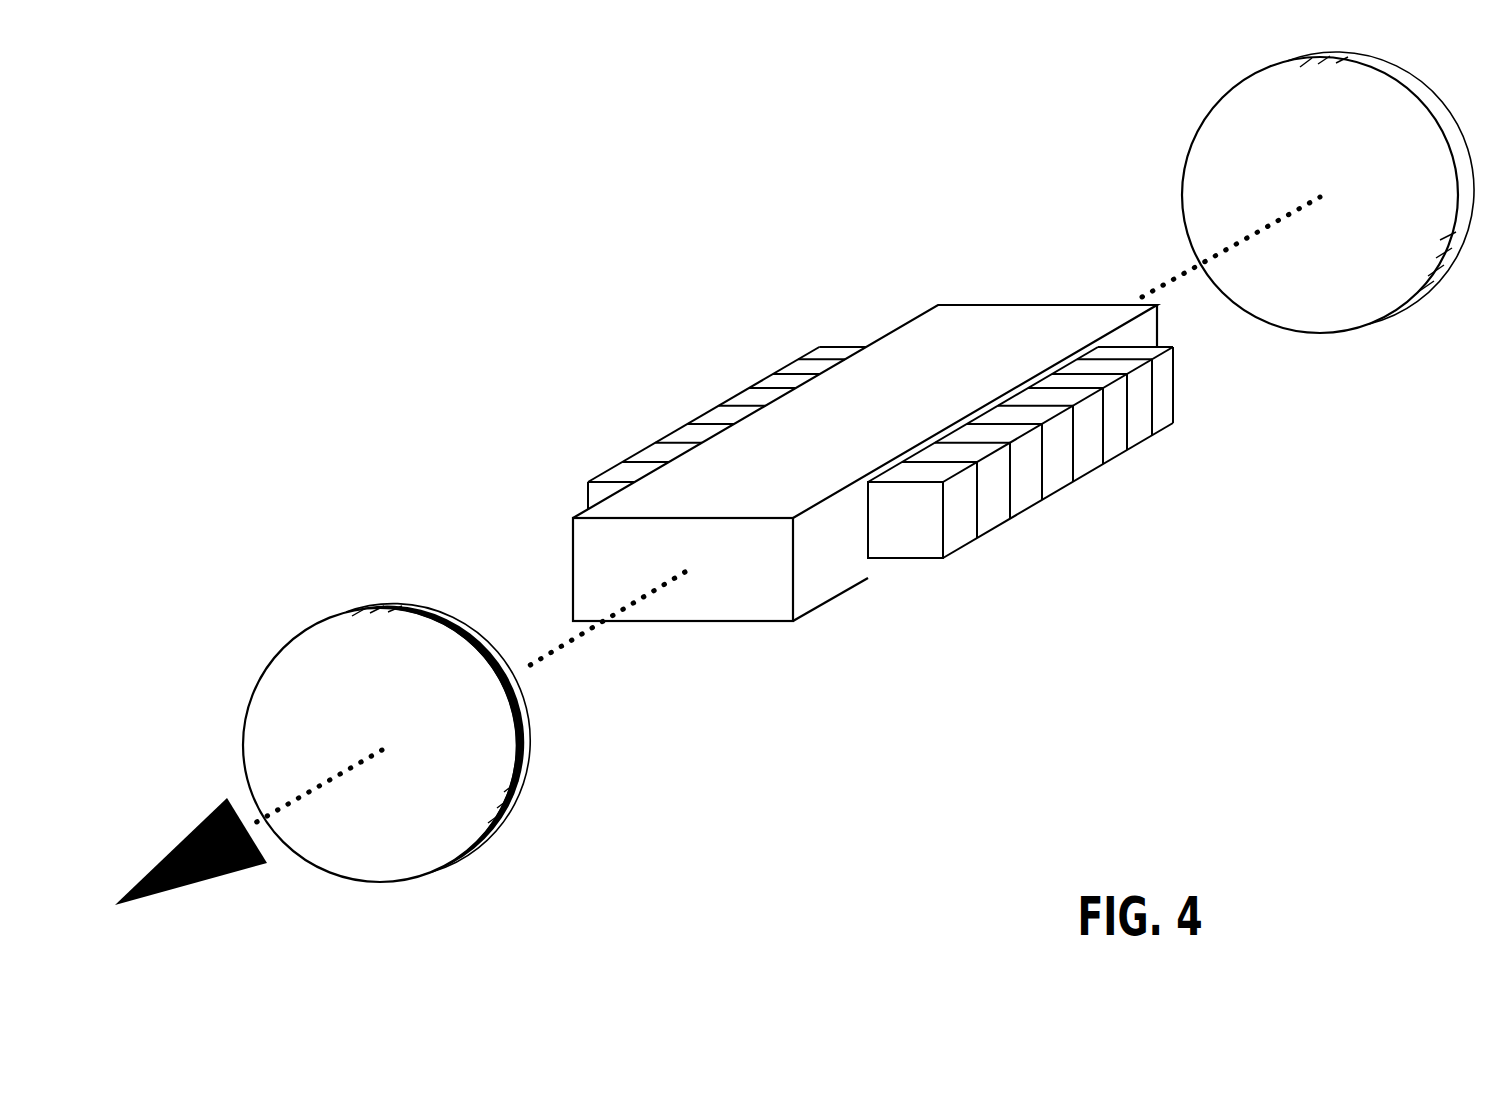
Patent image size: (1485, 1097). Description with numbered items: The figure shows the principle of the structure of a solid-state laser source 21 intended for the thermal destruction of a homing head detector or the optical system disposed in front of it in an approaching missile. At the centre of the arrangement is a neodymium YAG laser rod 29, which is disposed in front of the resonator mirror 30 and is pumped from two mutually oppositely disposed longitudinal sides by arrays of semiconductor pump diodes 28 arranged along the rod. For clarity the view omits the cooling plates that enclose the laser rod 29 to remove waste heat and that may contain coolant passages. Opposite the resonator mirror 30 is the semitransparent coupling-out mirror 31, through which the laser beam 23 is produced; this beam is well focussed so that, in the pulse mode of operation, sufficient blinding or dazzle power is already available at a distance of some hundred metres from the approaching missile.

The solid-state laser source 21 is at (957, 223).
The laser beam 23 is at (371, 771).
The semiconductor pump diodes 28 is at (708, 413).
The laser rod 29 is at (770, 605).
The resonator mirror 30 is at (1203, 153).
The semitransparent coupling-out mirror 31 is at (466, 828).